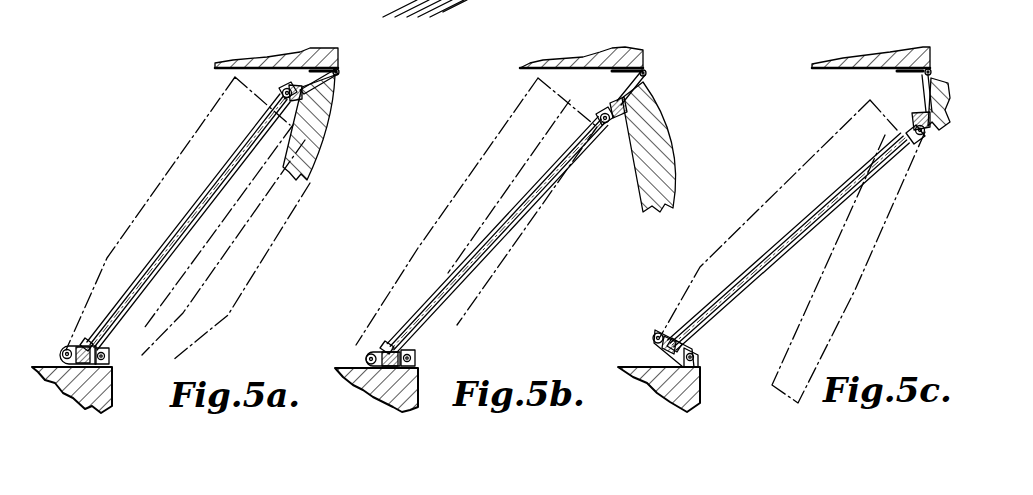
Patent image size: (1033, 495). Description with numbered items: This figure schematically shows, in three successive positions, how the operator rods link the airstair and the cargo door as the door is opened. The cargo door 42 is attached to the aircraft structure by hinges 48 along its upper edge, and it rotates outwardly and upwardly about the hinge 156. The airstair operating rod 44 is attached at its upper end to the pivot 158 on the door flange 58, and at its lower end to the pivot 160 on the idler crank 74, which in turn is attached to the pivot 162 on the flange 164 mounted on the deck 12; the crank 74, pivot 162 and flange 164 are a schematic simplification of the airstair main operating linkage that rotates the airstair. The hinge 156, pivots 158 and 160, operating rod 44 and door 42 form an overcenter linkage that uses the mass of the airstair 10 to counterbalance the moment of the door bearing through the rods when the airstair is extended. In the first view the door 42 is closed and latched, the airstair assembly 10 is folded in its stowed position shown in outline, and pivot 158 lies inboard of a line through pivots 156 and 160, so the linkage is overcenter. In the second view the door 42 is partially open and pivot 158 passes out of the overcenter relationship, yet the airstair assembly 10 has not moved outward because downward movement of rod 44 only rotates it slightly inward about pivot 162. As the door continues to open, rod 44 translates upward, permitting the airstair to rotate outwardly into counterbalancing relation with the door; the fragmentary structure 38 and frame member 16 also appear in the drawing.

In FIG. 5A, the airstair assembly 10 is at (165, 178).
In FIG. 5B, the airstair assembly 10 is at (463, 191).
In FIG. 5C, the airstair assembly 10 is at (760, 200).
In FIG. 5A, the deck 12 is at (40, 365).
In FIG. 5B, the deck 12 is at (347, 367).
In FIG. 5C, the deck 12 is at (633, 367).
In FIG. 5A, the roof frame rail 16 is at (340, 56).
In FIG. 5B, the roof frame rail 16 is at (646, 56).
In FIG. 5C, the roof frame rail 16 is at (930, 47).
In FIG. 5B, the seal 38 is at (460, 0).
In FIG. 5A, the cargo door 42 is at (322, 125).
In FIG. 5B, the cargo door 42 is at (668, 132).
In FIG. 5C, the cargo door 42 is at (940, 128).
In FIG. 5A, the airstair operating rod 44 is at (215, 185).
In FIG. 5B, the airstair operating rod 44 is at (540, 180).
In FIG. 5C, the airstair operating rod 44 is at (835, 202).
In FIG. 5A, the hinges 48 is at (333, 90).
In FIG. 5B, the hinges 48 is at (640, 88).
In FIG. 5C, the hinges 48 is at (903, 68).
In FIG. 5A, the door flange 58 is at (293, 83).
In FIG. 5B, the door flange 58 is at (614, 109).
In FIG. 5C, the door flange 58 is at (917, 120).
In FIG. 5A, the idler crank 74 is at (85, 342).
In FIG. 5B, the idler crank 74 is at (392, 348).
In FIG. 5C, the idler crank 74 is at (678, 342).
In FIG. 5A, the door hinge pivot 156 is at (341, 72).
In FIG. 5B, the door hinge pivot 156 is at (648, 74).
In FIG. 5C, the door hinge pivot 156 is at (923, 73).
In FIG. 5A, the upper rod pivot 158 is at (281, 88).
In FIG. 5B, the upper rod pivot 158 is at (608, 126).
In FIG. 5C, the upper rod pivot 158 is at (913, 122).
In FIG. 5A, the lower rod pivot 160 is at (62, 347).
In FIG. 5B, the lower rod pivot 160 is at (370, 356).
In FIG. 5C, the lower rod pivot 160 is at (653, 333).
In FIG. 5A, the crank pivot 162 is at (105, 348).
In FIG. 5B, the crank pivot 162 is at (418, 352).
In FIG. 5C, the crank pivot 162 is at (700, 353).
In FIG. 5A, the flange 164 is at (110, 357).
In FIG. 5B, the flange 164 is at (430, 360).
In FIG. 5C, the flange 164 is at (703, 363).